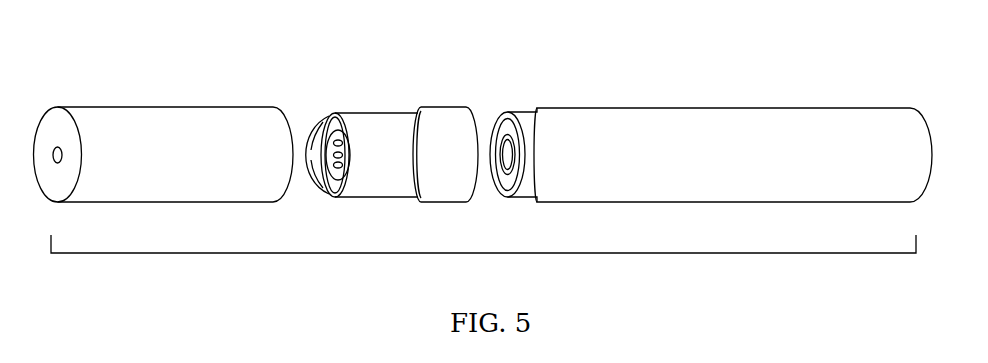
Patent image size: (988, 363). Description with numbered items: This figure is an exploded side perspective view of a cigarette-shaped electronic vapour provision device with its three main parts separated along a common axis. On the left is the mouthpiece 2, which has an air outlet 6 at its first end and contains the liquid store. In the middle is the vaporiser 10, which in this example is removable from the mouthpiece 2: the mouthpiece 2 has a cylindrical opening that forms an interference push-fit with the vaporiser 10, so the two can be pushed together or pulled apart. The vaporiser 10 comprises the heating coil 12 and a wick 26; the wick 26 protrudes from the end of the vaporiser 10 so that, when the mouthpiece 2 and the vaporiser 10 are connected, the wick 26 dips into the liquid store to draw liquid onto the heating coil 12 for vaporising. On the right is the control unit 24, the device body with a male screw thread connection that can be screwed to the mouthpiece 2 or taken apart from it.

The mouthpiece 2 is at (188, 133).
The air outlet 6 is at (53, 152).
The vaporiser 10 is at (387, 128).
The heating coil 12 is at (338, 168).
The control unit 24 is at (727, 135).
The wick 26 is at (314, 138).